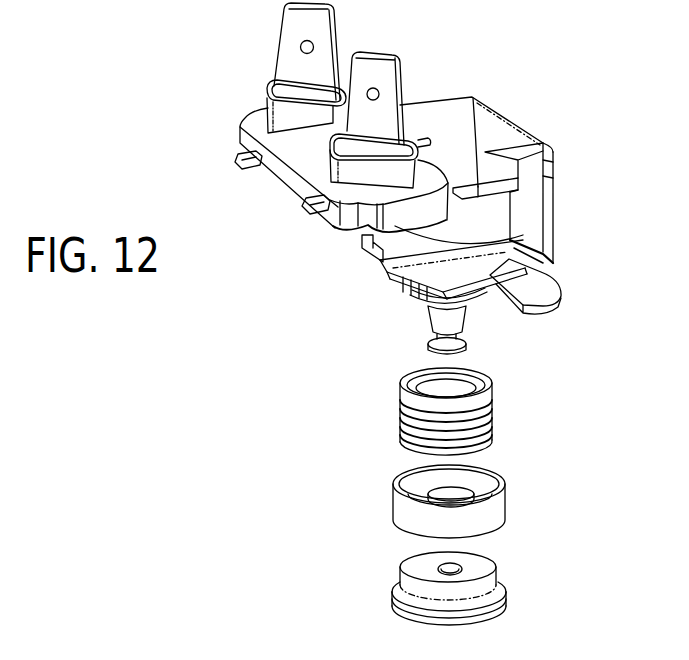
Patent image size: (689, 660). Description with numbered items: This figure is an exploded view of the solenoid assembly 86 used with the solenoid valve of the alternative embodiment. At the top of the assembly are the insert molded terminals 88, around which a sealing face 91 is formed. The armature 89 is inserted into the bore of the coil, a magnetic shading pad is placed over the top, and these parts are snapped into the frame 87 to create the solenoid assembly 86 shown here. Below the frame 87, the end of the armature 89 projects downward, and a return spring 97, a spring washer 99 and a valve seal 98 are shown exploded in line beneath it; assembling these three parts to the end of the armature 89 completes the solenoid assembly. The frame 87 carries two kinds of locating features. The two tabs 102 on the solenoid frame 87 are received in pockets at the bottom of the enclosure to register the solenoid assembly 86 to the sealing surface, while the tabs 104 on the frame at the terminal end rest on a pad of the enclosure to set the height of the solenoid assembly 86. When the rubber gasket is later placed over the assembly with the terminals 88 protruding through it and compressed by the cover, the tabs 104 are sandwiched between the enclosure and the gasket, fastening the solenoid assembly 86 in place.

The solenoid assembly 86 is at (574, 68).
The solenoid frame 87 is at (557, 187).
The terminals 88 is at (289, 43).
The armature 89 is at (440, 315).
The sealing face 91 is at (265, 100).
The return spring 97 is at (493, 412).
The valve seal 98 is at (490, 612).
The spring washer 99 is at (505, 497).
The tabs 102 is at (562, 302).
The tabs 104 is at (474, 94).